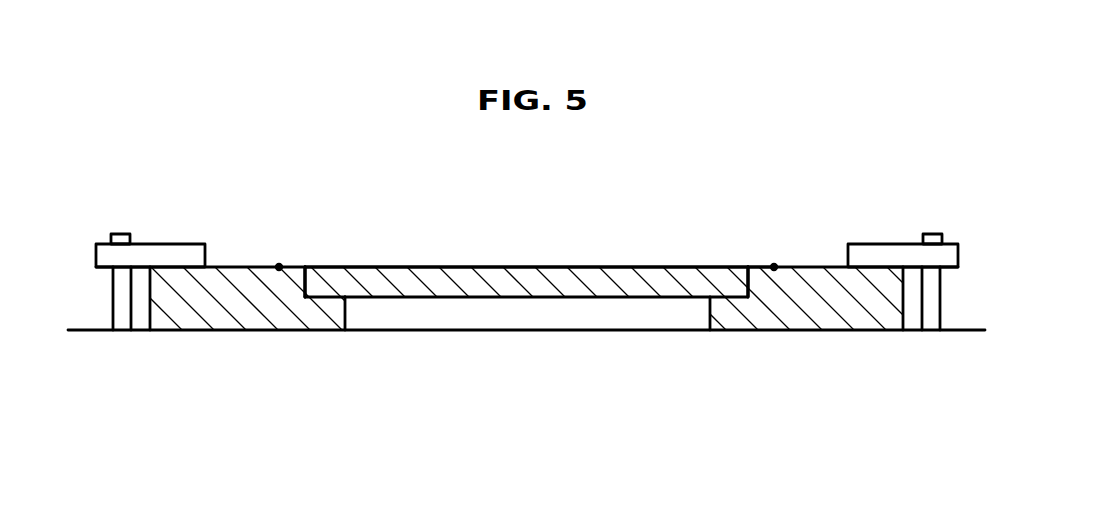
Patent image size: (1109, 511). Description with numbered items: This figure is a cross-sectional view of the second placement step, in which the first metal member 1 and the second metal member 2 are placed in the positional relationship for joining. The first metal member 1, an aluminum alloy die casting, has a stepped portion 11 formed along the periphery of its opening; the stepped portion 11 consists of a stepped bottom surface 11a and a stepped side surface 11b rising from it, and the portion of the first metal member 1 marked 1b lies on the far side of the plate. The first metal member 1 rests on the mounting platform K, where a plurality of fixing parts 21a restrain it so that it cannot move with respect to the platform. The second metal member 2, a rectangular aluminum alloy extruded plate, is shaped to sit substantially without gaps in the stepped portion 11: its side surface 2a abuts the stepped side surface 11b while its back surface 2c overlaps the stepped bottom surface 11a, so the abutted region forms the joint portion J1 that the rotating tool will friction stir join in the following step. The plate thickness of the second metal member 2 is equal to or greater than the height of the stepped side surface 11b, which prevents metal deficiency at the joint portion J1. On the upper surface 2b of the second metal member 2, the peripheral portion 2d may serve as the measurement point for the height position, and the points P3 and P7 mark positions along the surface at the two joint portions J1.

The first metal member 1 is at (838, 387).
The second portion of first member 1b is at (822, 266).
The second metal member 2 is at (548, 242).
The side surface 2a is at (765, 270).
The surface 2b is at (507, 267).
The back surface 2c is at (505, 298).
The peripheral portion 2d is at (323, 264).
The stepped portion 11 is at (427, 343).
The stepped bottom surface 11a is at (313, 290).
The stepped side surface 11b is at (307, 277).
The fixing part 21a is at (165, 243).
The joint portion J1 is at (304, 262).
The point P3 is at (279, 265).
The point P7 is at (776, 262).
The mounting platform K is at (526, 364).